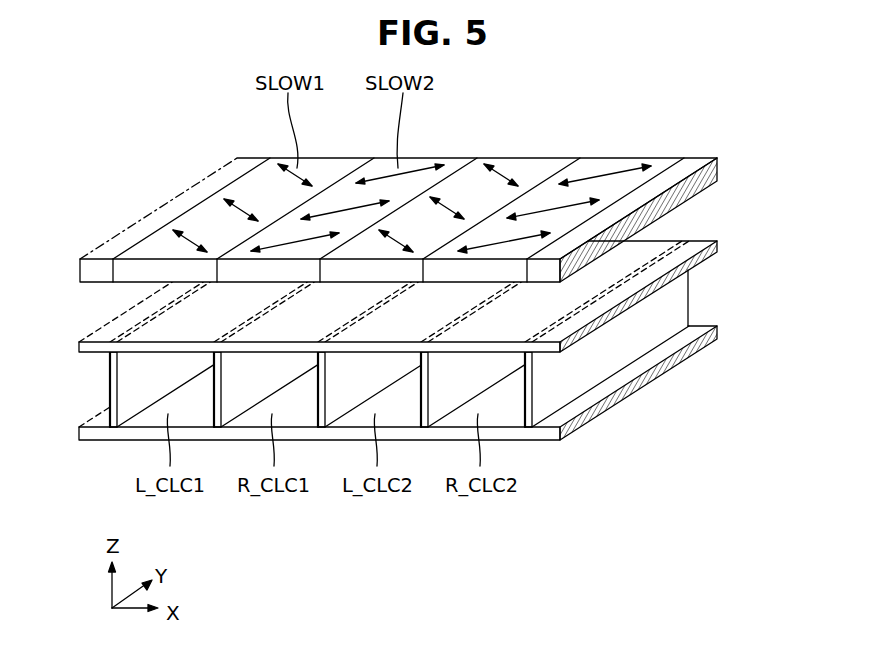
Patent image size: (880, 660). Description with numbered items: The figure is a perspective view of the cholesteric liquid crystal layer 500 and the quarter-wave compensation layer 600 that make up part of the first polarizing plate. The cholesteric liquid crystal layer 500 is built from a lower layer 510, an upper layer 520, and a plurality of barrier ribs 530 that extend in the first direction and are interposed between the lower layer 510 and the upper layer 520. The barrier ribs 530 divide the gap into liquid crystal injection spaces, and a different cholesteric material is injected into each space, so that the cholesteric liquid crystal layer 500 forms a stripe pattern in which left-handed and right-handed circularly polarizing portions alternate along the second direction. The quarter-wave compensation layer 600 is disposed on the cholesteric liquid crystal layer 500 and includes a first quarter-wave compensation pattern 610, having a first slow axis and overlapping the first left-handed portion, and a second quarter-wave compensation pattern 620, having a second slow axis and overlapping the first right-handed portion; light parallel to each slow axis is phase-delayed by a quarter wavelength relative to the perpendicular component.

The cholesteric liquid crystal layer 500 is at (374, 369).
The lower layer 510 is at (551, 441).
The upper layer 520 is at (560, 347).
The barrier ribs 530 is at (110, 390).
The λ/4 compensation layer 600 is at (438, 190).
The first λ/4 compensation pattern 610 is at (318, 158).
The second λ/4 compensation pattern 620 is at (420, 158).